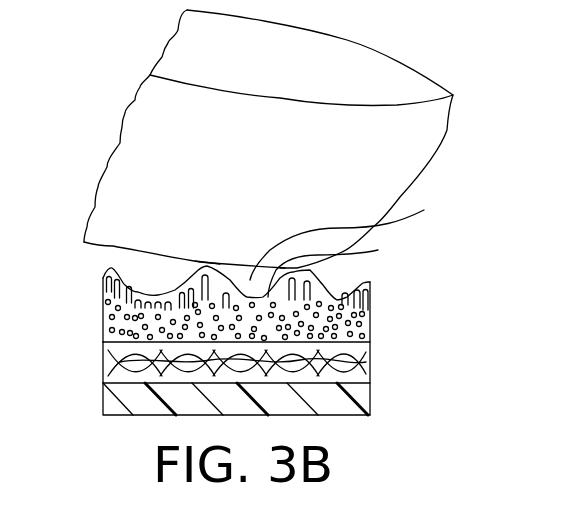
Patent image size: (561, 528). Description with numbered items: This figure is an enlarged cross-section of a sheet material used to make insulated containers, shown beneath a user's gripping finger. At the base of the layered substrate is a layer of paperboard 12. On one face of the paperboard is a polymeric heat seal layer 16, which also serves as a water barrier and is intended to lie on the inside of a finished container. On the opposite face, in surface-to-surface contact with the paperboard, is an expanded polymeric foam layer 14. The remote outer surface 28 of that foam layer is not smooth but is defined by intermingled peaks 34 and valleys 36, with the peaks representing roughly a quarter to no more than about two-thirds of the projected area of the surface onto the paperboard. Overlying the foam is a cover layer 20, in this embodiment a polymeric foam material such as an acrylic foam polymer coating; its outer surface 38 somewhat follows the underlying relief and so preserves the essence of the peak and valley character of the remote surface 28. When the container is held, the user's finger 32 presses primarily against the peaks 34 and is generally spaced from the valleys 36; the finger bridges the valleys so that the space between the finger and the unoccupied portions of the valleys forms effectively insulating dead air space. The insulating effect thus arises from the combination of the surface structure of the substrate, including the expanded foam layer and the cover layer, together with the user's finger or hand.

The paperboard layer 12 is at (372, 363).
The expanded polymeric foam layer 14 is at (245, 336).
The polymeric heat seal layer 16 is at (372, 403).
The cover layer 20 is at (103, 278).
The remote outer surface 28 is at (113, 246).
The user's finger 32 is at (136, 144).
The peaks 34 is at (207, 265).
The valleys 36 is at (355, 245).
The outer surface 38 is at (330, 290).